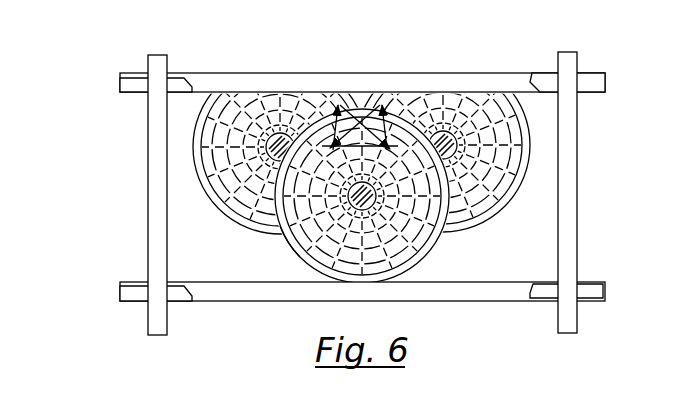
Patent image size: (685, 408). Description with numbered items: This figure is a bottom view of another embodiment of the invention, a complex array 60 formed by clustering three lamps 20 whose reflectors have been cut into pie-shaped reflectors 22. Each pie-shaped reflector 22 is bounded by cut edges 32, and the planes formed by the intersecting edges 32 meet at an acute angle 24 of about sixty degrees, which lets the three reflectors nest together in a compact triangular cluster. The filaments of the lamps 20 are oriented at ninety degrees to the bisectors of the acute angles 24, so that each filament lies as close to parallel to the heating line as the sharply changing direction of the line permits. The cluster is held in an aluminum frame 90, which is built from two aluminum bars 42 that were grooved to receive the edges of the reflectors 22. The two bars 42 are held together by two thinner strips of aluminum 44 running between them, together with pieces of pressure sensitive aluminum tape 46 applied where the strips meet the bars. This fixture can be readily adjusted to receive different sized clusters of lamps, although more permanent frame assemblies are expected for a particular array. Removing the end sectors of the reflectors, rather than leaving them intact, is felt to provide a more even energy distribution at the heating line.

The lamp 20 is at (543, 145).
The pie-shaped reflector 22 is at (438, 242).
The acute angle 24 is at (380, 107).
The reflector edge 32 is at (277, 236).
The aluminum bar 42 is at (213, 78).
The aluminum strip 44 is at (157, 177).
The pressure sensitive aluminum tape 46 is at (133, 88).
The complex array 60 is at (461, 63).
The aluminum frame 90 is at (585, 203).